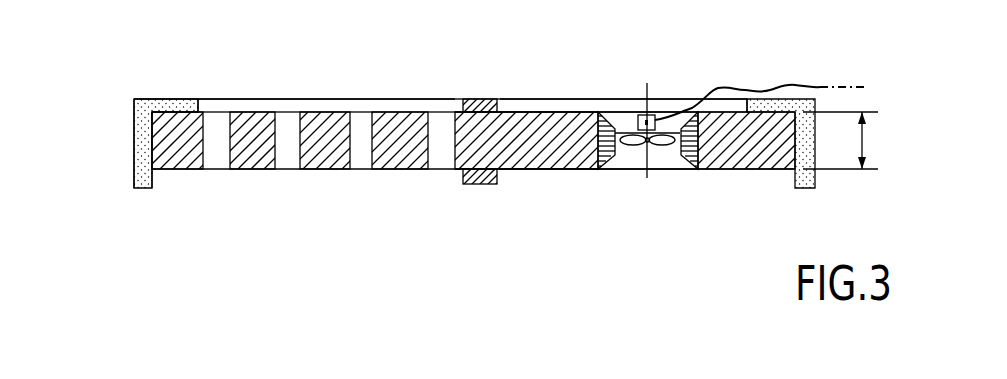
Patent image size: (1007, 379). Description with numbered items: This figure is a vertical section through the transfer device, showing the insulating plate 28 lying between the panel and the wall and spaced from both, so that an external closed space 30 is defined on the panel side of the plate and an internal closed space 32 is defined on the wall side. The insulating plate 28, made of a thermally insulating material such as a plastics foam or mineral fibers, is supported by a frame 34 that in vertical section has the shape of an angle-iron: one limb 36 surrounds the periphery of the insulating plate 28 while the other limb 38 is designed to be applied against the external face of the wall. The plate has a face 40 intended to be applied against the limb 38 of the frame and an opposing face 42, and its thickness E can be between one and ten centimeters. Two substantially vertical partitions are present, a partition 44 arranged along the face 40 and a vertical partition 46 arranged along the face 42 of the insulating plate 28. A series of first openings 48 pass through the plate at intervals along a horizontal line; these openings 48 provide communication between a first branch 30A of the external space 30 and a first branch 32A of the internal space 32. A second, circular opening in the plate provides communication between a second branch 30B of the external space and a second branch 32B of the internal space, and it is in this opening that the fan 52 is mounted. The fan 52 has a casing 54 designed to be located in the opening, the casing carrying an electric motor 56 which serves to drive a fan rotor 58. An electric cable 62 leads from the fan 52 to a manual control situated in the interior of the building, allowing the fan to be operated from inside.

The insulating plate 28 is at (523, 116).
The external closed space 30 is at (353, 182).
The first branch of the external space 30A is at (308, 182).
The second branch of the external space 30B is at (725, 182).
The internal closed space 32 is at (368, 90).
The first branch of the internal space 32A is at (312, 90).
The second branch of the internal space 32B is at (610, 90).
The frame 34 is at (126, 100).
The limb 36 is at (134, 160).
The limb 38 is at (178, 99).
The face 40 is at (562, 112).
The opposing face 42 is at (543, 170).
The partition 44 is at (480, 99).
The vertical partition 46 is at (470, 184).
The first openings 48 is at (283, 172).
The fan 52 is at (640, 150).
The casing 54 is at (608, 167).
The electric motor 56 is at (650, 113).
The fan rotor 58 is at (632, 165).
The electric cable 62 is at (790, 85).
The thickness E is at (846, 140).